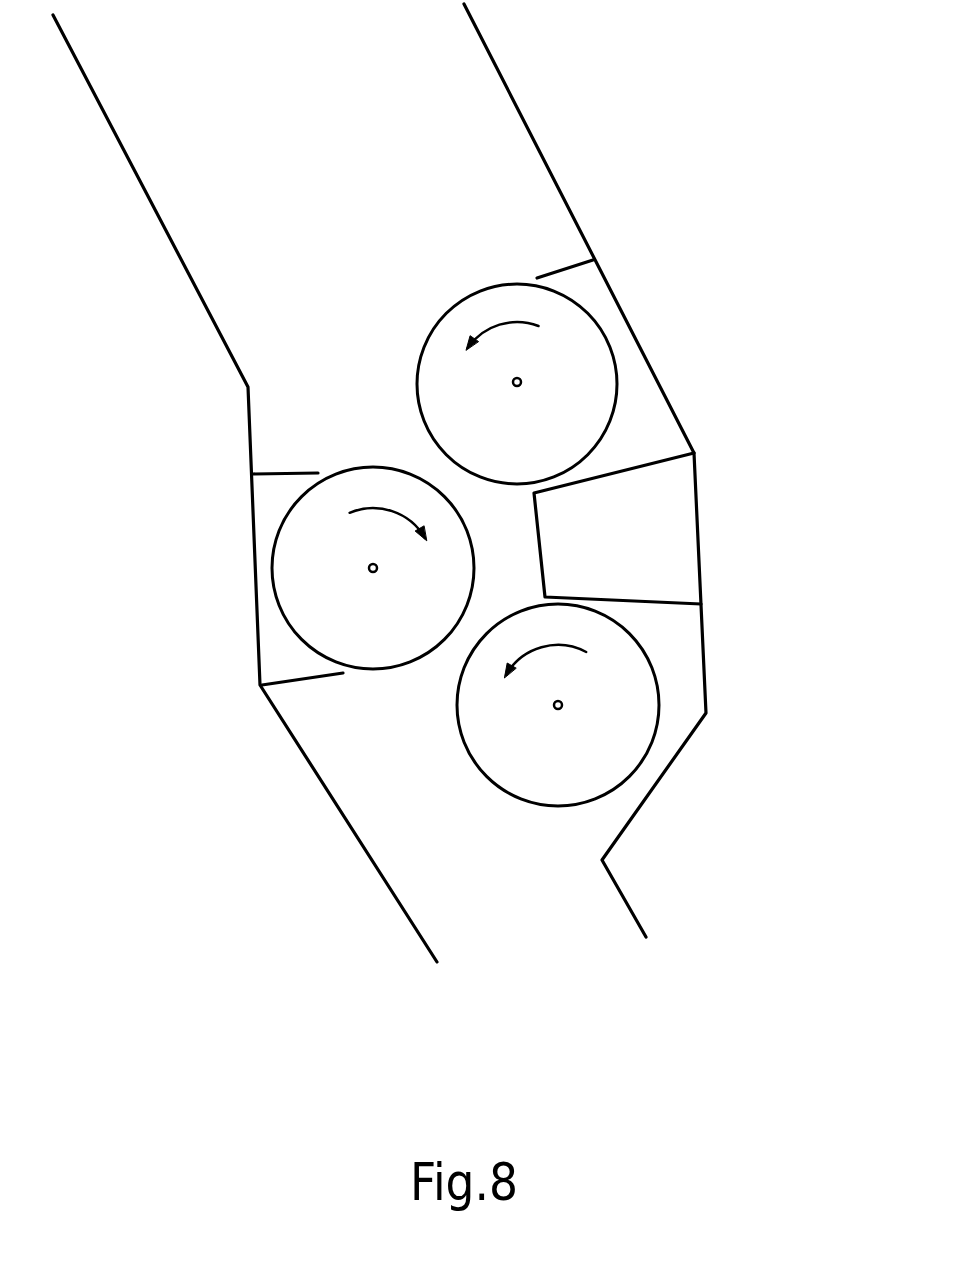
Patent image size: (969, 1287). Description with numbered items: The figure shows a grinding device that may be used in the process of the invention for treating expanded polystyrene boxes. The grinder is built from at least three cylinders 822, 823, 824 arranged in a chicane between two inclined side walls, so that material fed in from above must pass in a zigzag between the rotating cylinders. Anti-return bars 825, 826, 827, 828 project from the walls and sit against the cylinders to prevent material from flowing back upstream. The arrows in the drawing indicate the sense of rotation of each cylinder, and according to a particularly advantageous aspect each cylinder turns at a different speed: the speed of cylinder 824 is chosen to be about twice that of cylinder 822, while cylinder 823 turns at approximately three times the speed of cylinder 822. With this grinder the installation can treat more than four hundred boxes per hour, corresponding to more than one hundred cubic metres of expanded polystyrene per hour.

The cylinder 822 is at (587, 358).
The cylinder 823 is at (625, 727).
The cylinder 824 is at (327, 577).
The anti-return bar 825 is at (570, 262).
The anti-return bar 826 is at (281, 472).
The anti-return bar 827 is at (300, 686).
The anti-return bar 828 is at (657, 533).